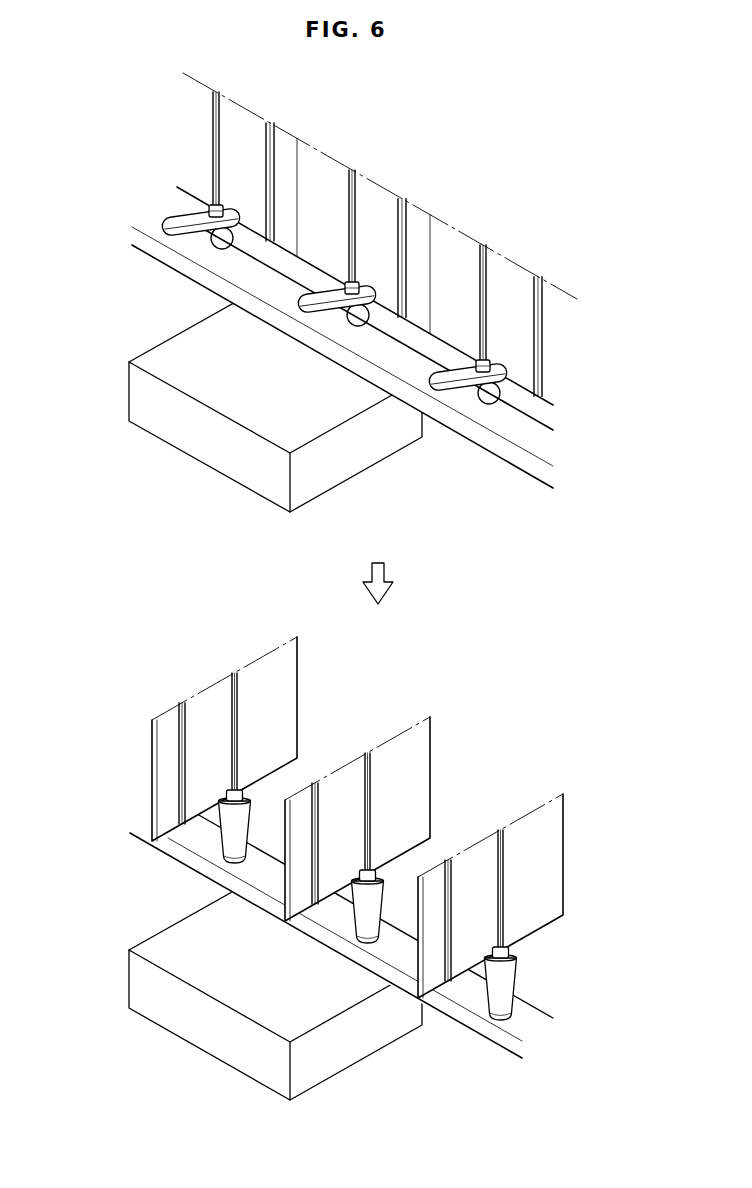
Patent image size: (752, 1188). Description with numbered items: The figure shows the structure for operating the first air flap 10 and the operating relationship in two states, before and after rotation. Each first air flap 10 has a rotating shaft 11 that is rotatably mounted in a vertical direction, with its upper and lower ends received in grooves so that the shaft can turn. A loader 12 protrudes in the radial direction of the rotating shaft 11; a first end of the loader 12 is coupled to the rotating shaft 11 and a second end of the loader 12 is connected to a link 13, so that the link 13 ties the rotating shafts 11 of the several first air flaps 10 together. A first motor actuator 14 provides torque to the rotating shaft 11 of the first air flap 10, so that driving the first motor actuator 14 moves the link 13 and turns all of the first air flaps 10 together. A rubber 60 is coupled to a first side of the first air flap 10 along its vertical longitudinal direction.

The first air flap 10 is at (322, 170).
The rotating shaft 11 is at (353, 172).
The rubber 60 is at (418, 215).
The loader 12 is at (458, 378).
The link 13 is at (483, 412).
The first motor actuator 14 is at (172, 350).